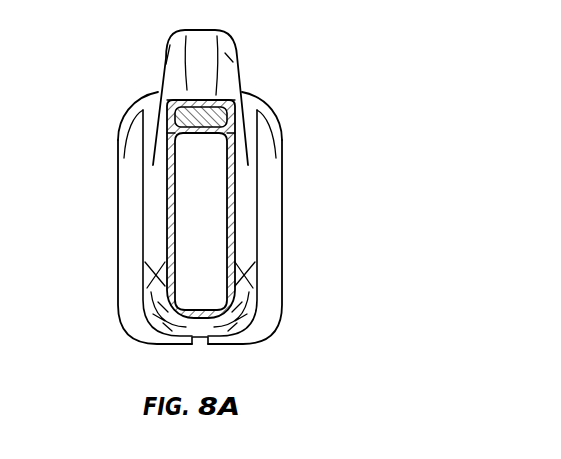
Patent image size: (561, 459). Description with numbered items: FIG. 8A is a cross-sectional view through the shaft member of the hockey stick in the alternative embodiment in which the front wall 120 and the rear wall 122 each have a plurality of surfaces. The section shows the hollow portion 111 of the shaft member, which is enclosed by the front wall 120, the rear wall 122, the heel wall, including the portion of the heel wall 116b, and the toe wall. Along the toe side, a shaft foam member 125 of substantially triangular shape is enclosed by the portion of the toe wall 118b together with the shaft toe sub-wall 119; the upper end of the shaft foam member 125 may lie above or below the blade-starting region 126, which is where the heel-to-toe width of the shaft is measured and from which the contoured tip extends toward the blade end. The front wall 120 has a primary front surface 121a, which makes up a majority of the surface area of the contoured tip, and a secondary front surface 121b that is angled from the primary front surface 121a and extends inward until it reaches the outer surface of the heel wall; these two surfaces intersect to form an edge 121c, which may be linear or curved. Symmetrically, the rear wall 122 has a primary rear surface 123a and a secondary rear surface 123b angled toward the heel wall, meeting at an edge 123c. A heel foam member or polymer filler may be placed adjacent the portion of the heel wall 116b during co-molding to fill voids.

The toe wall portion 118b is at (195, 90).
The shaft foam member 125 is at (192, 118).
The shaft toe sub-wall 119 is at (212, 118).
The primary rear surface 123a is at (243, 135).
The front wall 120 is at (156, 161).
The blade-starting region 126 is at (118, 185).
The rear wall 122 is at (243, 204).
The primary front surface 121a is at (168, 218).
The hollow portion 111 is at (215, 235).
The edge 121c is at (157, 272).
The edge 123c is at (247, 263).
The secondary front surface 121b is at (158, 305).
The secondary rear surface 123b is at (240, 302).
The heel wall portion 116b is at (196, 316).